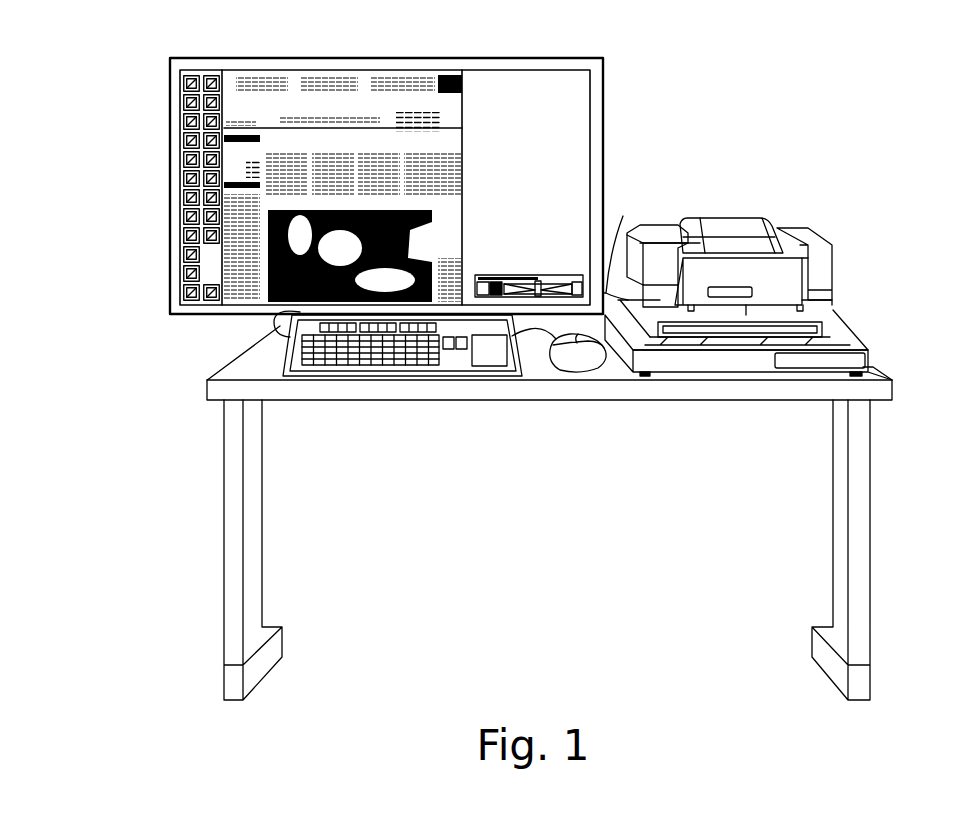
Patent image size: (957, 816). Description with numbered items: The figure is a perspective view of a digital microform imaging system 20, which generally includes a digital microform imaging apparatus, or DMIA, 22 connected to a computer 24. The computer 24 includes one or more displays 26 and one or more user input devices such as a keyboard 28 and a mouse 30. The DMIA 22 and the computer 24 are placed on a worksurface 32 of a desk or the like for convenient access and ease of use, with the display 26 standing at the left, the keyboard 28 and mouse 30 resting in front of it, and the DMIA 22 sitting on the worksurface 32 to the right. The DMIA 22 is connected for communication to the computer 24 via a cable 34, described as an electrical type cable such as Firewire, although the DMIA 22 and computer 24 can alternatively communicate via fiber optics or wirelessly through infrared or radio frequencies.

The digital microform imaging system 20 is at (670, 157).
The digital microform imaging apparatus 22 is at (832, 259).
The computer 24 is at (162, 169).
The display 26 is at (220, 252).
The keyboard 28 is at (478, 378).
The mouse 30 is at (587, 366).
The worksurface 32 is at (225, 374).
The cable 34 is at (618, 246).